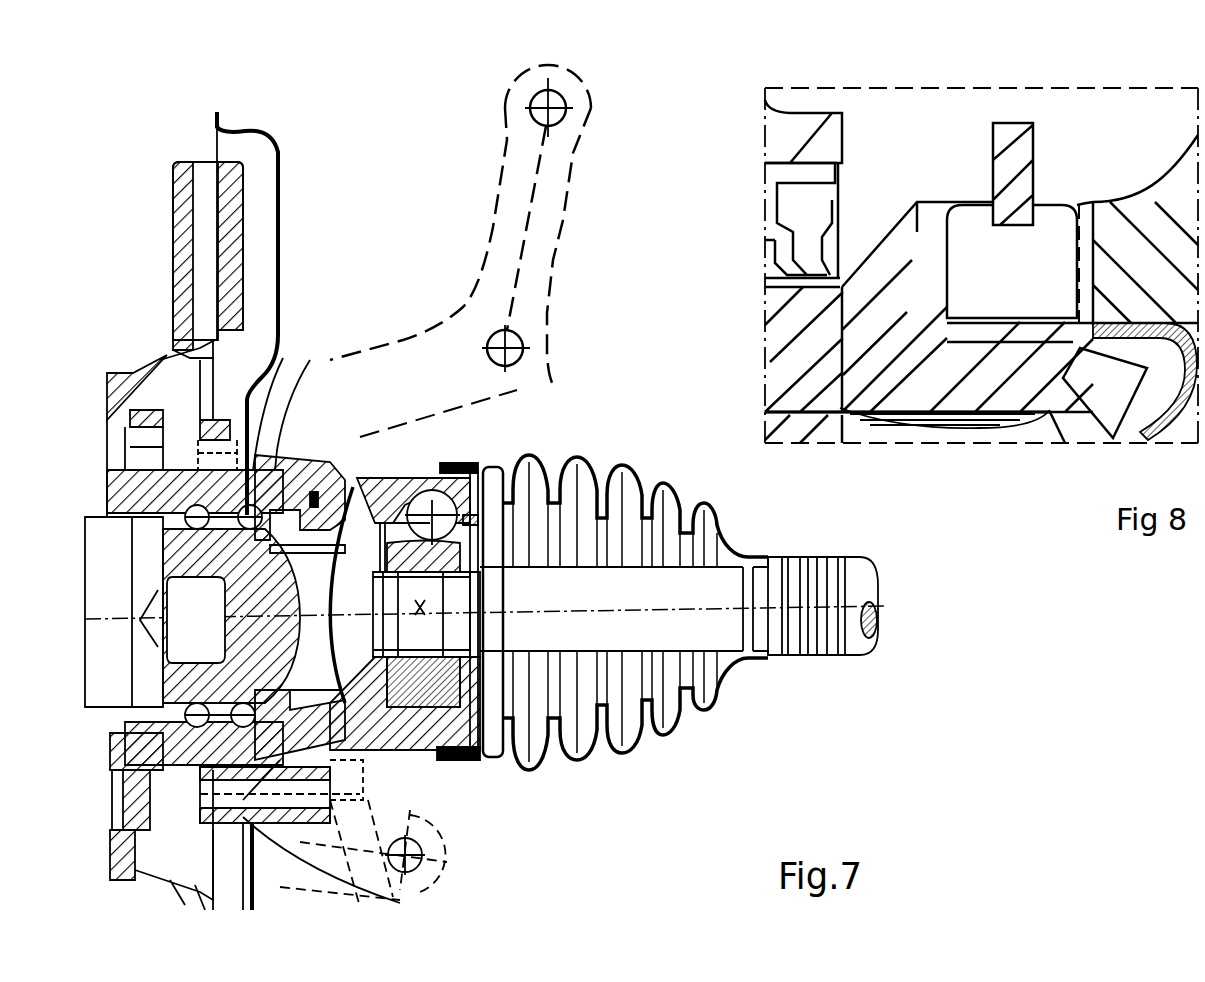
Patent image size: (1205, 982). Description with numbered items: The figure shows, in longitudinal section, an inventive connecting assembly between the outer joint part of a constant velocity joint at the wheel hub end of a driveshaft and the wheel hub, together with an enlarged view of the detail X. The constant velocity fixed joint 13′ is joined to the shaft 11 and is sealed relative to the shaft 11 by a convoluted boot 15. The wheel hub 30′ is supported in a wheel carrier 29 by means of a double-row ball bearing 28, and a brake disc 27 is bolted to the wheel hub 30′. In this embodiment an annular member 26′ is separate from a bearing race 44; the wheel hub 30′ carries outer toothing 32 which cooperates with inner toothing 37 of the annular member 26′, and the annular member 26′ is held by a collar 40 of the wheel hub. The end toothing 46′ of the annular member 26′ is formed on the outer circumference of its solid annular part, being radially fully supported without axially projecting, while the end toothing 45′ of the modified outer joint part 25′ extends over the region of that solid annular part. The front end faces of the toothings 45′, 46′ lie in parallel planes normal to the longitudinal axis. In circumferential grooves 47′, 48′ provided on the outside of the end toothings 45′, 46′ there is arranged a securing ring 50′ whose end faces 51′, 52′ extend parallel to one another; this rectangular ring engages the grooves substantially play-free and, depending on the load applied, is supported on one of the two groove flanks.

In FIG. 7, the shaft 11 is at (853, 573).
In FIG. 8, the shaft 11 is at (858, 558).
In FIG. 7, the constant velocity fixed joint 13′ is at (466, 438).
In FIG. 7, the convoluted boot 15 is at (630, 484).
In FIG. 7, the outer joint part 25′ is at (390, 478).
In FIG. 8, the outer joint part 25′ is at (1147, 173).
In FIG. 7, the annular member 26′ is at (300, 482).
In FIG. 8, the annular member 26′ is at (877, 217).
In FIG. 7, the brake disc 27 is at (178, 312).
In FIG. 7, the double-row ball bearing 28 is at (283, 358).
In FIG. 8, the double-row ball bearing 28 is at (803, 128).
In FIG. 7, the wheel carrier 29 is at (310, 360).
In FIG. 7, the wheel hub 30′ is at (115, 498).
In FIG. 8, the wheel hub 30′ is at (817, 433).
In FIG. 8, the outer toothing 32 is at (877, 430).
In FIG. 8, the inner toothing 37 is at (968, 427).
In FIG. 8, the collar 40 is at (1103, 395).
In FIG. 8, the bearing race 44 is at (870, 302).
In FIG. 8, the end toothing 45′ is at (1087, 200).
In FIG. 8, the end toothing 46′ is at (923, 227).
In FIG. 8, the circumferential groove 47′ is at (1057, 200).
In FIG. 8, the circumferential groove 48′ is at (995, 207).
In FIG. 8, the securing ring 50′ is at (1007, 137).
In FIG. 8, the end face 51′ is at (1040, 177).
In FIG. 8, the end face 52′ is at (997, 180).